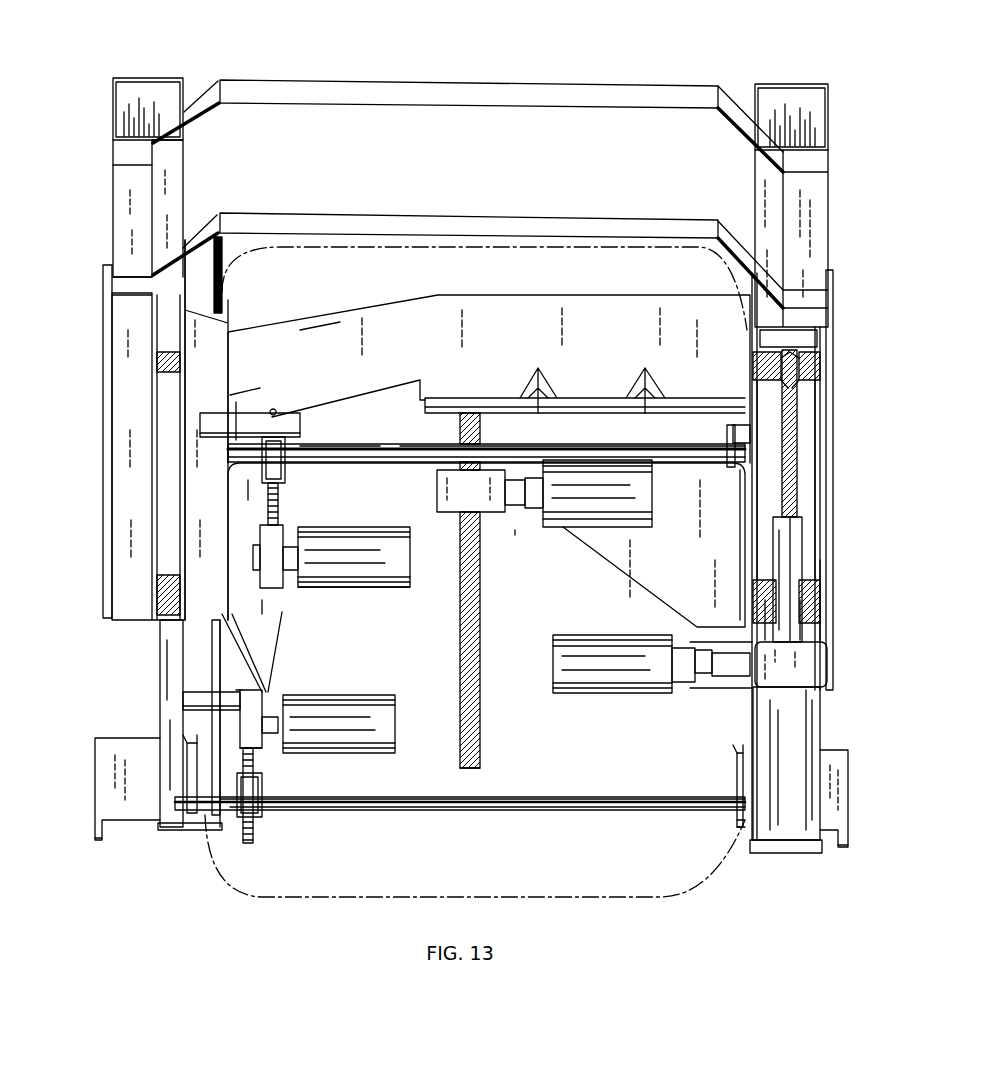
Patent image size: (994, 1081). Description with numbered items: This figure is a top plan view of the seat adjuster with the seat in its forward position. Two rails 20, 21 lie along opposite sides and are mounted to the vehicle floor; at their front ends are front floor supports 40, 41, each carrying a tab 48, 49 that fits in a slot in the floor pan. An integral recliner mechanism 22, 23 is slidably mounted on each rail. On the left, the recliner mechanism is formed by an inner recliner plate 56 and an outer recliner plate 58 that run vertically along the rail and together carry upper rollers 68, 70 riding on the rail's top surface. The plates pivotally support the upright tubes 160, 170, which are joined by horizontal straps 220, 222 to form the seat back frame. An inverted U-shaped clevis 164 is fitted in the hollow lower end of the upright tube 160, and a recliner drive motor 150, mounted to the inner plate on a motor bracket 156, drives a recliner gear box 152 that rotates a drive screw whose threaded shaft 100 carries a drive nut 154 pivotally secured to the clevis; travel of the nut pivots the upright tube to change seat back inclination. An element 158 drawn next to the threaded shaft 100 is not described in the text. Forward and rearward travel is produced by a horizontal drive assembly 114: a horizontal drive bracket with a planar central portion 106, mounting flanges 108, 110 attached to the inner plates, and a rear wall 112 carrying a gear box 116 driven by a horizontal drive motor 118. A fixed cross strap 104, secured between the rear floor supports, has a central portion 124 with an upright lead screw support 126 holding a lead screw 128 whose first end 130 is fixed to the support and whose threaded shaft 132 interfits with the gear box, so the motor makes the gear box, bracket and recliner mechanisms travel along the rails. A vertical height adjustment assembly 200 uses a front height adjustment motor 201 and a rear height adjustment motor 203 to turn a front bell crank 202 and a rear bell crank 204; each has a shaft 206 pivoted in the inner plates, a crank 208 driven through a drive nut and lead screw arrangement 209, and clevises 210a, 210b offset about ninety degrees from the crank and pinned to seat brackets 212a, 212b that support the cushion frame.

The horizontal strap 220 is at (388, 80).
The horizontal strap 222 is at (417, 215).
The upright tube 170 is at (186, 176).
The upright tube 160 is at (756, 180).
The integral recliner mechanism 23 is at (103, 314).
The rail 21 is at (160, 652).
The fixed cross strap 104 is at (525, 298).
The central portion 124 is at (342, 330).
The lead screw support 126 is at (470, 400).
The wall 112 is at (674, 470).
The mounting flange 110 is at (744, 540).
The rear bell crank 204 is at (348, 444).
The shaft 206 is at (562, 445).
The clevis 210a is at (320, 432).
The seat bracket 212a is at (240, 410).
The drive nut and lead screw arrangement 209 is at (248, 490).
The crank 208 is at (285, 472).
The central portion 106 is at (345, 527).
The rear height adjustment motor 203 is at (360, 588).
The mounting flange 108 is at (270, 613).
The front height adjustment motor 201 is at (370, 755).
The vertical height adjustment assembly 200 is at (290, 827).
The front bell crank 202 is at (540, 812).
The first end 130 is at (462, 420).
The lead screw 128 is at (458, 650).
The threaded shaft 132 is at (481, 736).
The gear box 116 is at (483, 514).
The horizontal drive motor 118 is at (600, 528).
The horizontal drive assembly 114 is at (517, 572).
The recliner drive motor 150 is at (585, 694).
The motor bracket 156 is at (820, 629).
The clevis 164 is at (826, 336).
The integral recliner mechanism 22 is at (836, 353).
The drive nut 154 is at (802, 377).
The upper roller 70 is at (800, 390).
The threaded shaft 100 is at (796, 442).
The inner recliner plate 56 is at (760, 478).
The sleeve 158 is at (802, 532).
The upper roller 68 is at (805, 586).
The outer recliner plate 58 is at (825, 602).
The recliner gear box 152 is at (793, 684).
The rail 20 is at (820, 737).
The clevis 210b is at (727, 441).
The seat bracket 212b is at (734, 428).
The front floor support 41 is at (97, 790).
The tab 49 is at (100, 841).
The front floor support 40 is at (848, 802).
The tab 48 is at (838, 849).